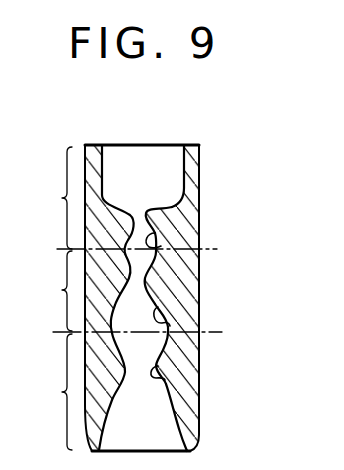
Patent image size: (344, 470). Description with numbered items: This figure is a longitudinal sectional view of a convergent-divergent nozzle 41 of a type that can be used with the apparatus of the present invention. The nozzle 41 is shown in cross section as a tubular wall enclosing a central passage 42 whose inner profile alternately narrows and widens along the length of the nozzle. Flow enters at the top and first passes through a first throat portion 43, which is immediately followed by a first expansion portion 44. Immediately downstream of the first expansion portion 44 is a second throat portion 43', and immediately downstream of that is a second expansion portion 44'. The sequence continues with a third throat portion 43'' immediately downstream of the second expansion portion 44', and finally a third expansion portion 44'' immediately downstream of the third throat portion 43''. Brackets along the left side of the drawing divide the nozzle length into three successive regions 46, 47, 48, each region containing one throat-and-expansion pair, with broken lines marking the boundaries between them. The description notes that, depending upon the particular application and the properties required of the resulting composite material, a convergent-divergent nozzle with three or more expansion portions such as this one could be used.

The nozzle 41 is at (201, 160).
The bore 42 is at (125, 157).
The first throat portion 43 is at (158, 205).
The first expansion portion 44 is at (190, 234).
The second throat portion 43' is at (193, 278).
The second expansion portion 44' is at (197, 315).
The third throat portion 43'' is at (201, 352).
The third expansion portion 44'' is at (152, 404).
The upper section 46 is at (121, 198).
The middle section 47 is at (125, 291).
The lower section 48 is at (50, 392).